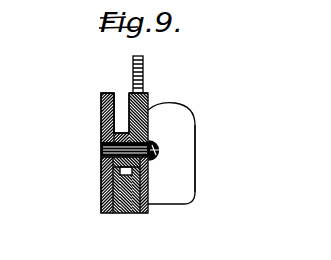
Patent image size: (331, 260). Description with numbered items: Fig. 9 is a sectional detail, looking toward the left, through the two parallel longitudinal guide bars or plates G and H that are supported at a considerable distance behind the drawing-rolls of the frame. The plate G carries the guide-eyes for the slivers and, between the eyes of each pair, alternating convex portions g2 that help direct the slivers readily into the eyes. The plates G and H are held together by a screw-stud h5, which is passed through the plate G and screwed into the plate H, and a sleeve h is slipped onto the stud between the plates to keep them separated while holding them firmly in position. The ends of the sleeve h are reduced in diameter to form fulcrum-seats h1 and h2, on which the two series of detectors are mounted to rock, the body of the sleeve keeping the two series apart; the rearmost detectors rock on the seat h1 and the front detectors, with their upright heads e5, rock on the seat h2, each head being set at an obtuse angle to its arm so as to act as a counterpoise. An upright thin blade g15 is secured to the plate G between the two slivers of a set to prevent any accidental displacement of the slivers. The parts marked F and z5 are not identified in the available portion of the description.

The block body F is at (130, 236).
The guide bar or plate H is at (78, 219).
The guide bar or plate G is at (150, 209).
The sleeve h is at (102, 125).
The fulcrum-seat h1 is at (148, 123).
The fulcrum-seat h2 is at (102, 172).
The pivot screw h5 is at (152, 142).
The upright head e5 is at (102, 97).
The rod z5 is at (144, 58).
The convex portion g2 is at (148, 107).
The upright thin blade g15 is at (190, 148).